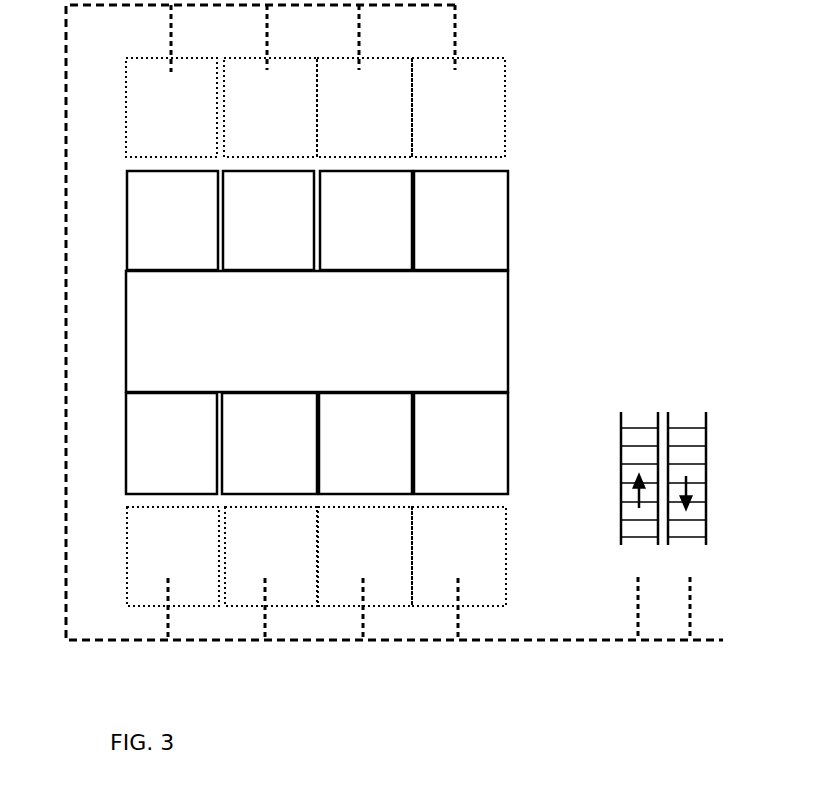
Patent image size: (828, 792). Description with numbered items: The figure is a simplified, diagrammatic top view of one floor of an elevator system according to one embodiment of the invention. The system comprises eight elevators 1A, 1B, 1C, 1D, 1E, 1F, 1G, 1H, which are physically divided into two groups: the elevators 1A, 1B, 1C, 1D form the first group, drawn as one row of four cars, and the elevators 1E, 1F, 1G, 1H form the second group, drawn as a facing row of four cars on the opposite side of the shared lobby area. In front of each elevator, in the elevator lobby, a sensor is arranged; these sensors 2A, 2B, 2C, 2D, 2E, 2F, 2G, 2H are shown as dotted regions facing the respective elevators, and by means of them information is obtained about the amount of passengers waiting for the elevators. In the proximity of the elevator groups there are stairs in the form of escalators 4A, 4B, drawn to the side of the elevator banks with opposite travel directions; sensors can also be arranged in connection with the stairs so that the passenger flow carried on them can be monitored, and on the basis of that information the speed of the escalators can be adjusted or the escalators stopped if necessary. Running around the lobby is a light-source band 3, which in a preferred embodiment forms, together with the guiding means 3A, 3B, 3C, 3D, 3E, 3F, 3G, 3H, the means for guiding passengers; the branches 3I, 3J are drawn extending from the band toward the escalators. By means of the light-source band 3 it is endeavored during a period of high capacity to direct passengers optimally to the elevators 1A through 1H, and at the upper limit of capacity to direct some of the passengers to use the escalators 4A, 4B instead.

The light-source band 3 is at (65, 412).
The elevator 1A is at (140, 406).
The elevator 1B is at (252, 400).
The elevator 1C is at (355, 403).
The elevator 1D is at (448, 402).
The elevator 1E is at (172, 256).
The elevator 1F is at (273, 256).
The elevator 1G is at (365, 252).
The elevator 1H is at (458, 250).
The sensor 2A is at (142, 586).
The sensor 2B is at (245, 588).
The sensor 2C is at (340, 585).
The sensor 2D is at (437, 588).
The sensor 2E is at (138, 78).
The sensor 2F is at (248, 70).
The sensor 2G is at (348, 70).
The sensor 2H is at (442, 72).
The means for guiding passengers 3A is at (168, 616).
The means for guiding passengers 3B is at (265, 616).
The means for guiding passengers 3C is at (363, 616).
The means for guiding passengers 3D is at (458, 616).
The means for guiding passengers 3E is at (172, 38).
The means for guiding passengers 3F is at (268, 38).
The means for guiding passengers 3G is at (360, 38).
The means for guiding passengers 3H is at (456, 30).
The branch track 3I is at (638, 620).
The branch track 3J is at (690, 620).
The escalator 4A is at (648, 425).
The escalator 4B is at (703, 425).